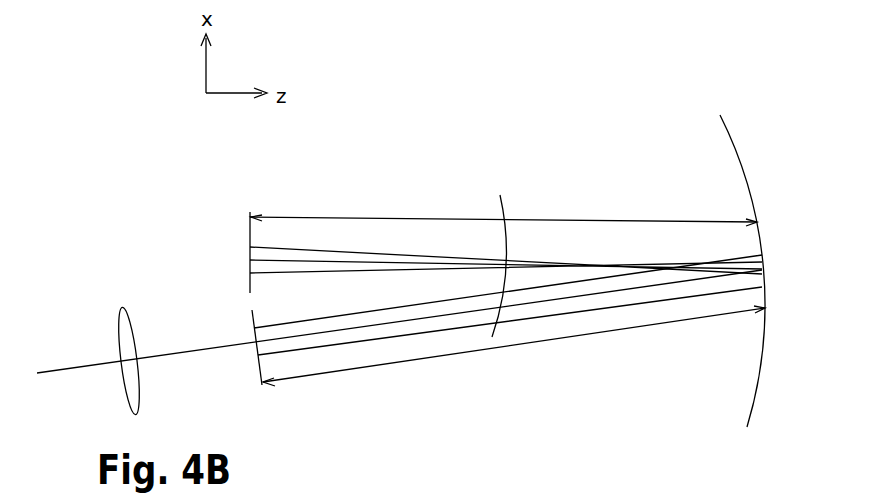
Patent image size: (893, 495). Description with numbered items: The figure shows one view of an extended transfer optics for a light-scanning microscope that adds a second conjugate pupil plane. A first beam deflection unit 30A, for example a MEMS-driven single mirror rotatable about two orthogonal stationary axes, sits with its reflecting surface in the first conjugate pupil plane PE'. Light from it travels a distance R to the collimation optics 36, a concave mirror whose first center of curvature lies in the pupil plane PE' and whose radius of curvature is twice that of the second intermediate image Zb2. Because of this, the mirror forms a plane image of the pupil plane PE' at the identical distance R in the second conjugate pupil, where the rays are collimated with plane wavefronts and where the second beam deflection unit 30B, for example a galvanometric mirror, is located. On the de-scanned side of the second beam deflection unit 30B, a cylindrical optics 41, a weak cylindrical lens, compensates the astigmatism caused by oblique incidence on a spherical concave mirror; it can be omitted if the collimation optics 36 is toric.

The collimation optics 36 is at (720, 115).
The cylindrical optics 41 is at (118, 322).
The first beam deflection unit 30A is at (250, 248).
The second beam deflection unit 30B is at (254, 338).
The second intermediate image Zb2 is at (500, 195).
The distance between concave mirror and conjugate pupil R is at (362, 217).
The first conjugate pupil plane PE' is at (215, 265).